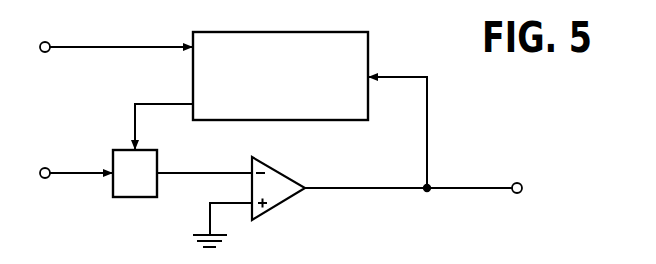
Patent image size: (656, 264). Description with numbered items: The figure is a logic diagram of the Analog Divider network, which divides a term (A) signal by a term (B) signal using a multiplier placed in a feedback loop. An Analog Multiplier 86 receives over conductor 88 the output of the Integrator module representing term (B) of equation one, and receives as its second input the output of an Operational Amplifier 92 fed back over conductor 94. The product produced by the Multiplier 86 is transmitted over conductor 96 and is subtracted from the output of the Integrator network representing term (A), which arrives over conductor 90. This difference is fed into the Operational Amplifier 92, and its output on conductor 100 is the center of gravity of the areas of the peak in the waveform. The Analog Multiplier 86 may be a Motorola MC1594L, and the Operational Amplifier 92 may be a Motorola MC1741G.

The Analog Multiplier 86 is at (349, 36).
The conductor 88 is at (100, 46).
The conductor 90 is at (80, 172).
The Operational Amplifier 92 is at (283, 200).
The conductor 94 is at (428, 97).
The conductor 96 is at (132, 100).
The conductor 100 is at (450, 187).